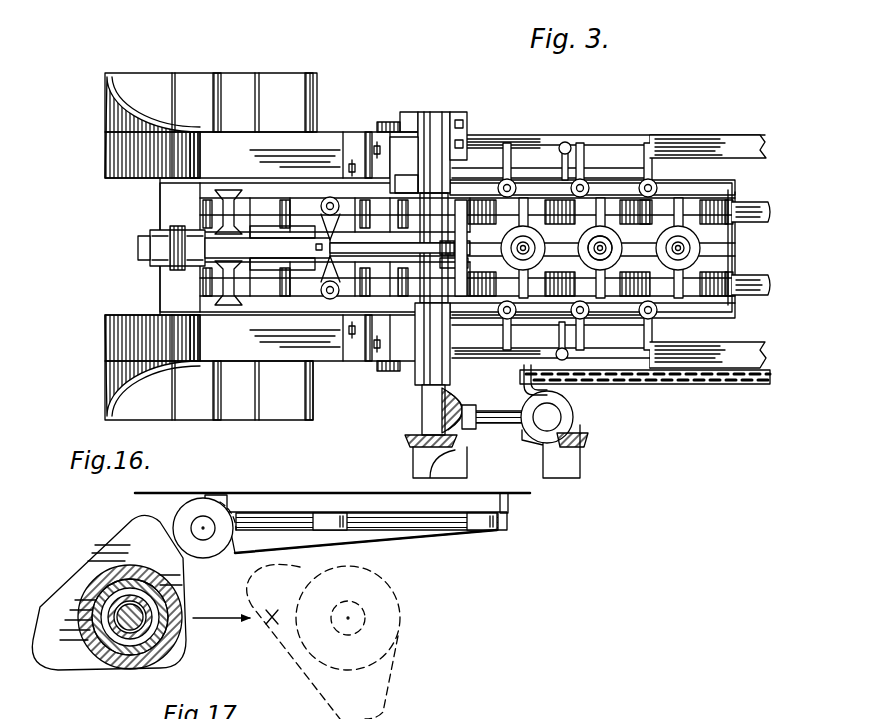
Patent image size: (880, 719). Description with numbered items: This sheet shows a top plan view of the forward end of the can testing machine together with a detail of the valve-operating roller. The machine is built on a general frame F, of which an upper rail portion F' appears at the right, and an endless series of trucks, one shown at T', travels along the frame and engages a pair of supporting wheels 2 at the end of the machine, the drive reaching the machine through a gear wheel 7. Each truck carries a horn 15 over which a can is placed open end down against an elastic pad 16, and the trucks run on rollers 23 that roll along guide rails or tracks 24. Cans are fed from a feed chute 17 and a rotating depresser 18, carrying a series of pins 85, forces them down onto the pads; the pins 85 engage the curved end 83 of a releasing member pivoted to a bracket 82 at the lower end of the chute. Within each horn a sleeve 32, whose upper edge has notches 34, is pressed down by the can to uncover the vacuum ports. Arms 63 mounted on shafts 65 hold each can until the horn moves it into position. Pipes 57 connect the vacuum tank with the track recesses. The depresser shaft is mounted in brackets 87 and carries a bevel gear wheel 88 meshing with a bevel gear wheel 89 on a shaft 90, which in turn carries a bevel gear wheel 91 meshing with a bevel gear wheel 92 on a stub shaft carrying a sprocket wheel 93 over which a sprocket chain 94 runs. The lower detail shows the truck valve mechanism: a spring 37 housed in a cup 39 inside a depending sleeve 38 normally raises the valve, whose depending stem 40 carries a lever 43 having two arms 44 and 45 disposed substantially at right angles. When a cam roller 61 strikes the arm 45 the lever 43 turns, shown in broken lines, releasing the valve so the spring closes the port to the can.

In FIG. 3, the supporting wheels 2 is at (122, 250).
In FIG. 3, the gear wheel 7 is at (683, 133).
In FIG. 3, the horn 15 is at (175, 262).
In FIG. 3, the elastic pad 16 is at (200, 218).
In FIG. 3, the feed chute 17 is at (296, 250).
In FIG. 3, the rotating depresser 18 is at (463, 213).
In FIG. 3, the rollers 23 is at (733, 208).
In FIG. 3, the guide rails 24 is at (768, 212).
In FIG. 3, the sleeve 32 is at (601, 256).
In FIG. 3, the notches 34 is at (690, 262).
In FIG. 3, the pipes 57 is at (566, 141).
In FIG. 3, the arm 63 is at (345, 228).
In FIG. 3, the shaft 65 is at (326, 299).
In FIG. 3, the bracket 82 is at (318, 262).
In FIG. 3, the curved end 83 is at (420, 170).
In FIG. 3, the pins 85 is at (455, 266).
In FIG. 3, the brackets 87 is at (436, 130).
In FIG. 3, the bevel gear wheel 88 is at (410, 441).
In FIG. 3, the bevel gear wheel 89 is at (445, 414).
In FIG. 3, the shaft 90 is at (503, 425).
In FIG. 3, the bevel gear wheel 91 is at (574, 421).
In FIG. 3, the bevel gear wheel 92 is at (589, 440).
In FIG. 3, the sprocket wheel 93 is at (527, 392).
In FIG. 3, the sprocket chain 94 is at (722, 382).
In FIG. 3, the frame F is at (248, 246).
In FIG. 3, the frame rail F' is at (708, 233).
In FIG. 3, the table T' is at (676, 196).
In FIG. 16, the spring 37 is at (122, 655).
In FIG. 16, the depending sleeve 38 is at (166, 620).
In FIG. 16, the cup 39 is at (142, 655).
In FIG. 16, the stem 40 is at (100, 650).
In FIG. 16, the lever 43 is at (400, 632).
In FIG. 16, the arm 44 is at (50, 622).
In FIG. 16, the arm 45 is at (127, 541).
In FIG. 16, the cam roller 61 is at (197, 503).